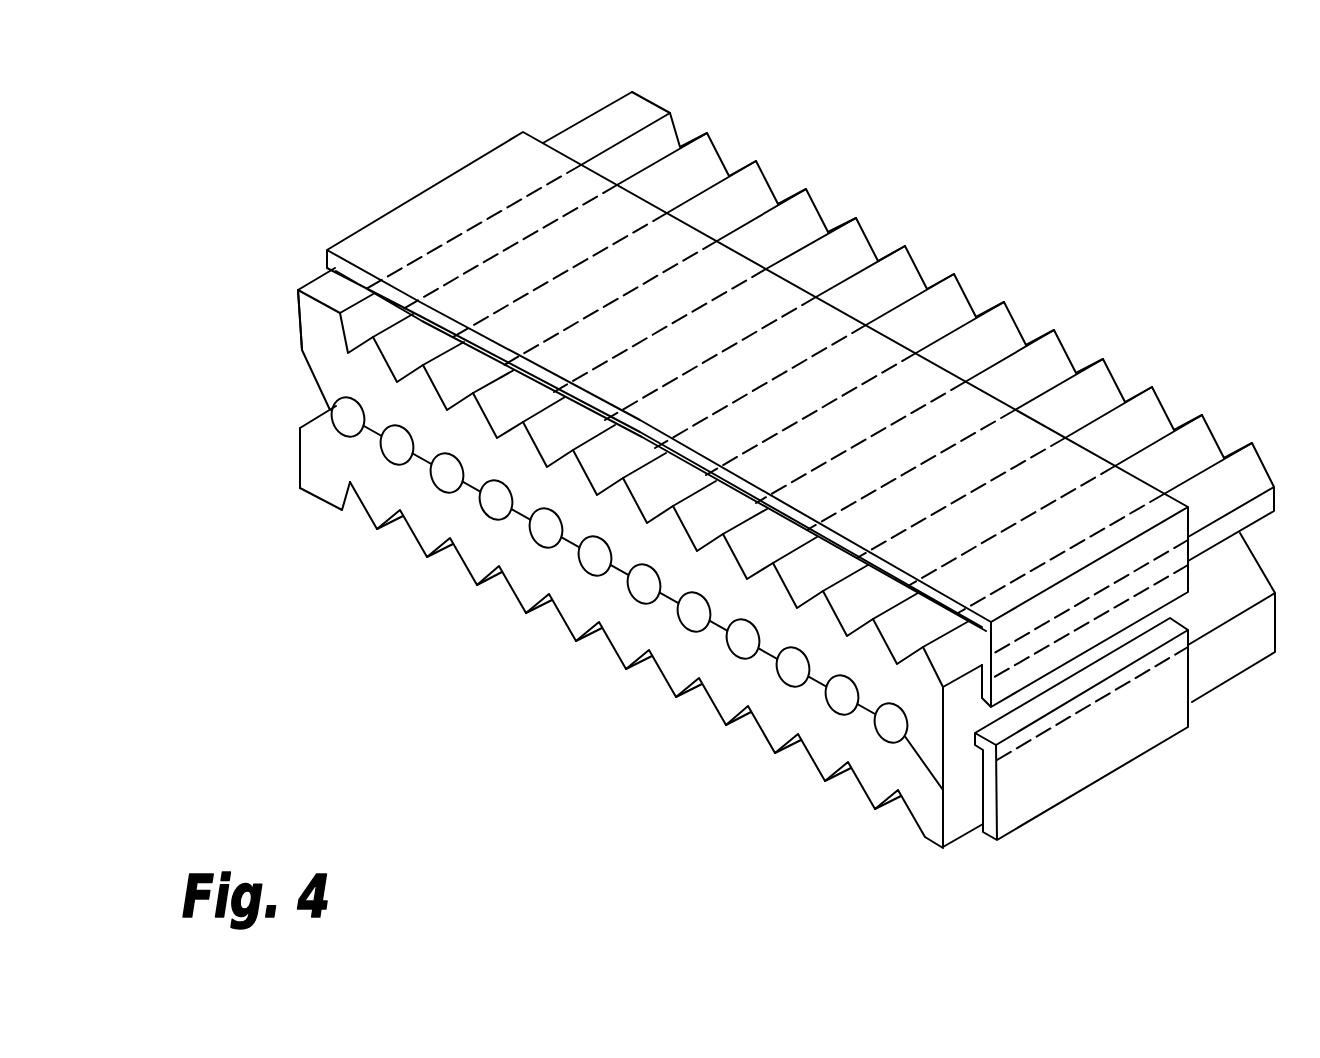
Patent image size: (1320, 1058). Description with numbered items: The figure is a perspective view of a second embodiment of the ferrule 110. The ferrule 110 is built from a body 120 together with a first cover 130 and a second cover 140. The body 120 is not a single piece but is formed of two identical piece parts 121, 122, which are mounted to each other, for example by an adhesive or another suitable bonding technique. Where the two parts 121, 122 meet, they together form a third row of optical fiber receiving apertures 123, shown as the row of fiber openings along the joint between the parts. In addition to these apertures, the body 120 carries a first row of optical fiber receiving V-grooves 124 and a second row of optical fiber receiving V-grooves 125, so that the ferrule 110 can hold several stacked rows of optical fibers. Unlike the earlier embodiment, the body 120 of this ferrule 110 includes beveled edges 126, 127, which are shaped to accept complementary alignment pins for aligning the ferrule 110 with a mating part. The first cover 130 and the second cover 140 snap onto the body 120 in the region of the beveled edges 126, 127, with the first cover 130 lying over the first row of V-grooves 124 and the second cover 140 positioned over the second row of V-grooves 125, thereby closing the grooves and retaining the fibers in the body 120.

The ferrule 110 is at (653, 103).
The body 120 is at (305, 478).
The piece part 121 is at (298, 315).
The piece part 122 is at (312, 458).
The optical fiber receiving apertures 123 is at (892, 728).
The first row of optical fiber receiving V-grooves 124 is at (863, 232).
The second row of optical fiber receiving V-grooves 125 is at (600, 625).
The beveled edge 126 is at (949, 742).
The beveled edge 127 is at (318, 386).
The first cover 130 is at (382, 212).
The second cover 140 is at (1127, 740).